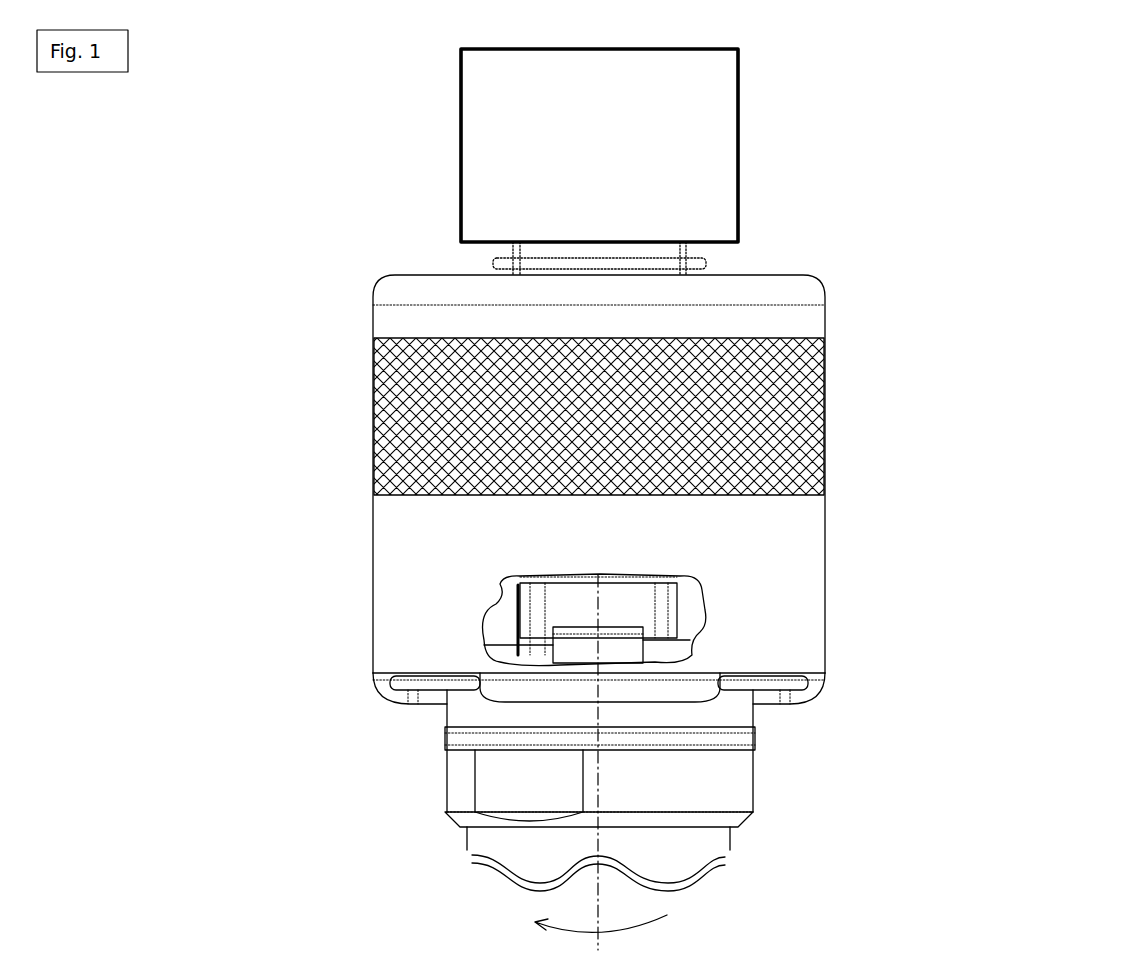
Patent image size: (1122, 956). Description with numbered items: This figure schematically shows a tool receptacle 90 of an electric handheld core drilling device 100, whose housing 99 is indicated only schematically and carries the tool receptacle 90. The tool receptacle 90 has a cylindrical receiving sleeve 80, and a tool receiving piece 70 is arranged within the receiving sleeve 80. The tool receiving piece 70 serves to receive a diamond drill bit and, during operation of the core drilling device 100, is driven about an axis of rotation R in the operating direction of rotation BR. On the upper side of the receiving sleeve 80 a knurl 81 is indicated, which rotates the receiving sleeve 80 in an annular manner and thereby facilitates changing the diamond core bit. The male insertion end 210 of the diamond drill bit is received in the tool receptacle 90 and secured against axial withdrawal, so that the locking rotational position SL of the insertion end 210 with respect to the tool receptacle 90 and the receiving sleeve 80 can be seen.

The electric handheld core drilling device 100 is at (397, 132).
The housing 99 is at (705, 147).
The tool receptacle 90 is at (315, 440).
The knurl 81 is at (780, 410).
The receiving sleeve 80 is at (803, 652).
The tool receiving piece 70 is at (645, 615).
The insertion end 210 is at (620, 665).